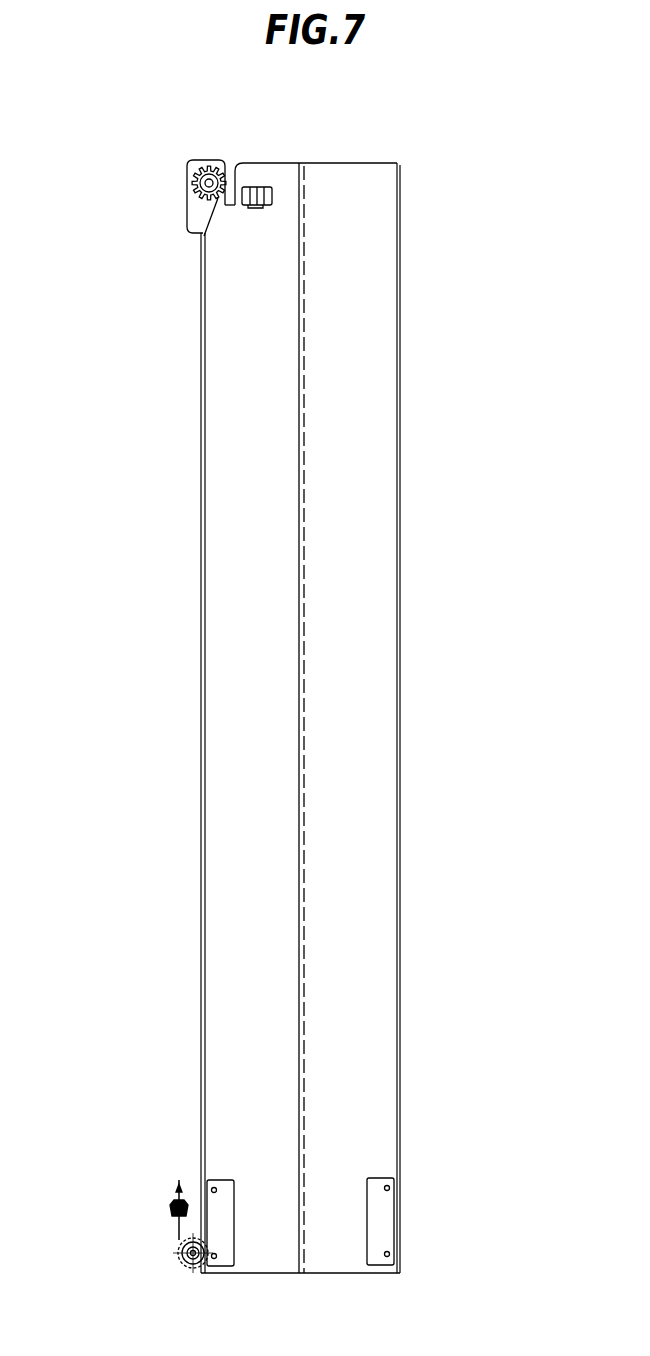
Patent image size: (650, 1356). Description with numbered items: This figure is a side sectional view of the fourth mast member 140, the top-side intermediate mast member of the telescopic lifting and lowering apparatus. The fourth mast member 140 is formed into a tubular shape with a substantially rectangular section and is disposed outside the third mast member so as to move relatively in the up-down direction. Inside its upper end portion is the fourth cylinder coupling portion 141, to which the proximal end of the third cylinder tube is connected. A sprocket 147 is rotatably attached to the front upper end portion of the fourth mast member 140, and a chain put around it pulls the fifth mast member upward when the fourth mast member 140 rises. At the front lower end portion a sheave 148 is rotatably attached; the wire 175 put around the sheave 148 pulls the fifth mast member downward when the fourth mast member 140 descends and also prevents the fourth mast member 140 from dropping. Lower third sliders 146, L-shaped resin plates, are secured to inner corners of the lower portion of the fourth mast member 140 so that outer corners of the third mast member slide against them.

The fourth mast member 140 is at (400, 417).
The fourth cylinder coupling portion 141 is at (253, 187).
The lower third slider 146 is at (224, 1195).
The sprocket 147 is at (192, 196).
The sheave 148 is at (180, 1260).
The wire 175 is at (177, 1226).